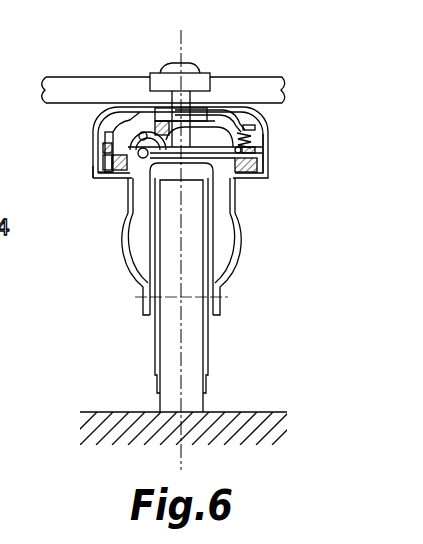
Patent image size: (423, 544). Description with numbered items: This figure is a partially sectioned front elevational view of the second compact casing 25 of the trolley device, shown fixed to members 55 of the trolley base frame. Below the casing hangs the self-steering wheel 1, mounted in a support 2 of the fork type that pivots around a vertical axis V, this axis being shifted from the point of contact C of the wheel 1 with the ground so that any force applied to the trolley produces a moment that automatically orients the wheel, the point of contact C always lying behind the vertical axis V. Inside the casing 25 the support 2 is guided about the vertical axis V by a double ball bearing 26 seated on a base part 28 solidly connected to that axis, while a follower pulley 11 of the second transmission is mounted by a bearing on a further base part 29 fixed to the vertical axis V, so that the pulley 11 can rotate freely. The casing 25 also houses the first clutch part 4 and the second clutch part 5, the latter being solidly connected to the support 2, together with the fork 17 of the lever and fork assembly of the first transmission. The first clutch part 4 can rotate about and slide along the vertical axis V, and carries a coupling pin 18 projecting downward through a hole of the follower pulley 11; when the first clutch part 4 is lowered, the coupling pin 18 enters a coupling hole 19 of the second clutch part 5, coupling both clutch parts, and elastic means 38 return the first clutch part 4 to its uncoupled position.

The self-steering wheel 1 is at (160, 342).
The support 2 is at (235, 250).
The first clutch part 4 is at (112, 108).
The second clutch part 5 is at (93, 166).
The follower pulley 11 is at (102, 150).
The fork 17 is at (247, 108).
The coupling pin 18 is at (104, 140).
The coupling hole 19 is at (106, 175).
The second casing 25 is at (268, 176).
The double ball bearing 26 is at (135, 118).
The base part 28 is at (118, 174).
The base part 29 is at (155, 125).
The elastic means 38 is at (258, 136).
The members of the base frame 55 is at (60, 86).
The vertical axis V is at (208, 68).
The point of contact C is at (183, 413).